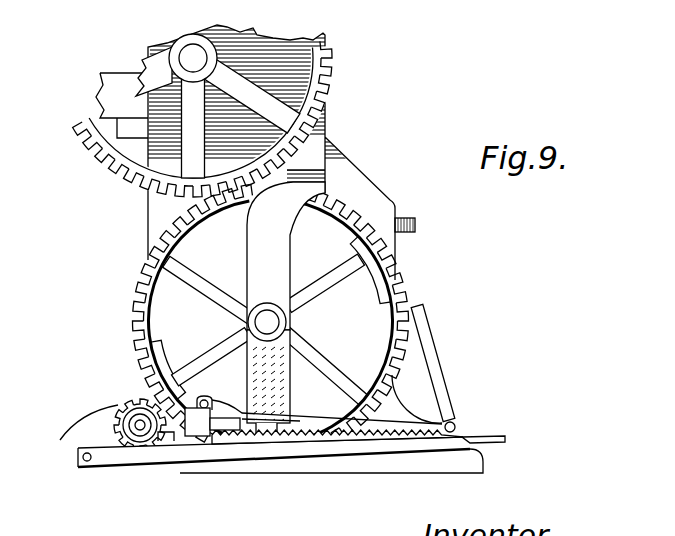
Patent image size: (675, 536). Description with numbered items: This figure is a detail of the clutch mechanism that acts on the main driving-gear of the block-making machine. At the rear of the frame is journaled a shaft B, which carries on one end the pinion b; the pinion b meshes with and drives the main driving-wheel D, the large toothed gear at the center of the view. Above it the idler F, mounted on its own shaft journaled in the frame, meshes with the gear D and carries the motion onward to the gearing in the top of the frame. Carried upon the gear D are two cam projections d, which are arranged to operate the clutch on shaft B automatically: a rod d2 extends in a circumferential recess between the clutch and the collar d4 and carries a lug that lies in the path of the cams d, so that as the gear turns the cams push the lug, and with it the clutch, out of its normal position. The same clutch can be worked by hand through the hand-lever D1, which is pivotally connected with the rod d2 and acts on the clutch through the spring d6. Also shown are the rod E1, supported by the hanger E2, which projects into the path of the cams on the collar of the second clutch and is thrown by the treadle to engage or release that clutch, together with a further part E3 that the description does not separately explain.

The idler F is at (102, 158).
The main driving-wheel D is at (137, 292).
The cam projections d is at (158, 350).
The hand-lever D1 is at (440, 387).
The rod E1 is at (300, 452).
The hanger E2 is at (275, 385).
The plate lip E3 is at (517, 420).
The pinion b is at (115, 417).
The shaft B is at (140, 430).
The rod d2 is at (178, 425).
The collar d4 is at (200, 428).
The spring d6 is at (363, 438).